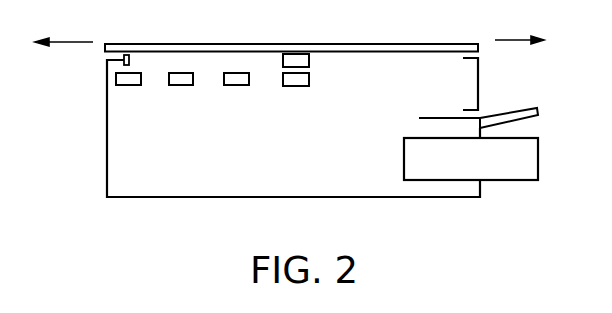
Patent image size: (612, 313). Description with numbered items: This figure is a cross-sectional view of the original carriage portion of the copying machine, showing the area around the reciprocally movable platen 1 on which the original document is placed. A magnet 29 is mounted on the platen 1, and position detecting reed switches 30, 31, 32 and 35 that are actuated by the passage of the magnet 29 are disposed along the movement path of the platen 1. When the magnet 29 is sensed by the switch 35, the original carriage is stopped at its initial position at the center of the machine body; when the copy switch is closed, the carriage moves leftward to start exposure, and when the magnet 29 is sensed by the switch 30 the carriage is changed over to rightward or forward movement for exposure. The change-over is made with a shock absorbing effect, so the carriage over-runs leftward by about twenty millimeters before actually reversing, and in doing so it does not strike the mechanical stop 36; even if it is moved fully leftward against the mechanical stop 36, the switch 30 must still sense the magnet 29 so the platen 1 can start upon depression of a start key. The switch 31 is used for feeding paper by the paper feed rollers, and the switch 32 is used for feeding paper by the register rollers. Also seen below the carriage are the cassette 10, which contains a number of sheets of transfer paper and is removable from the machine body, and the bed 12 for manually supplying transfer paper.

The platen 1 is at (450, 44).
The cassette 10 is at (538, 158).
The manual supply bed 12 is at (532, 108).
The magnet 29 is at (300, 54).
The reed switch 30 is at (129, 85).
The reed switch 31 is at (177, 85).
The reed switch 32 is at (236, 85).
The reed switch 35 is at (300, 86).
The mechanical stop 36 is at (129, 56).